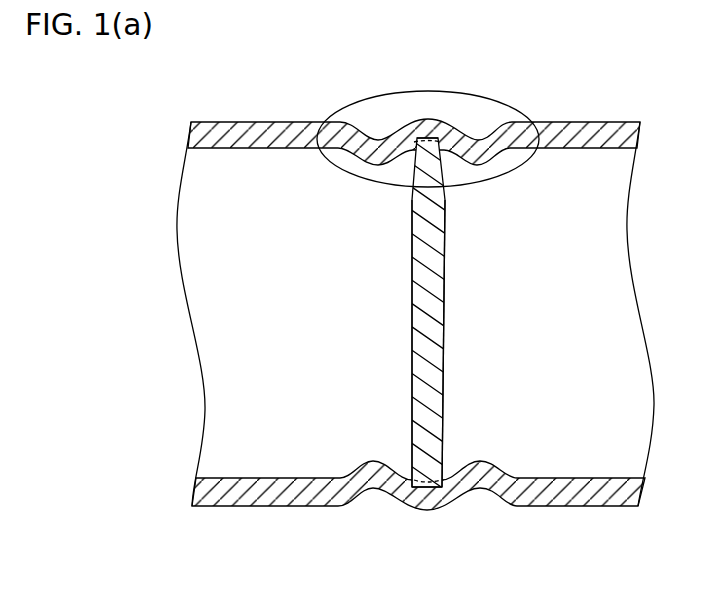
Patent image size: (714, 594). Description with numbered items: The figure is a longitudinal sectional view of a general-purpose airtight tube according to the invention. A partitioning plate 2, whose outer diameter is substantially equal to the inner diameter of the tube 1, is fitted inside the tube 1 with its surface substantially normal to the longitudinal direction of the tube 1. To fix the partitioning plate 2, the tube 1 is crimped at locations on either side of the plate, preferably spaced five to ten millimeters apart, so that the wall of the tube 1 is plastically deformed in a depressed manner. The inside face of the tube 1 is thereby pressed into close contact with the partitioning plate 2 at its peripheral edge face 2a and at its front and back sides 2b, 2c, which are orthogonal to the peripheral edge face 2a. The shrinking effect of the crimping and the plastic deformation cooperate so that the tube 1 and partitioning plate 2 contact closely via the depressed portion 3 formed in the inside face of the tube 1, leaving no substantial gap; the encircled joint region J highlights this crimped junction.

The tube 1 is at (583, 132).
The partitioning plate 2 is at (427, 442).
The peripheral edge face 2a is at (423, 496).
The front side 2b is at (412, 431).
The back side 2c is at (445, 431).
The depressed portion 3 is at (434, 144).
The joint region J is at (428, 124).